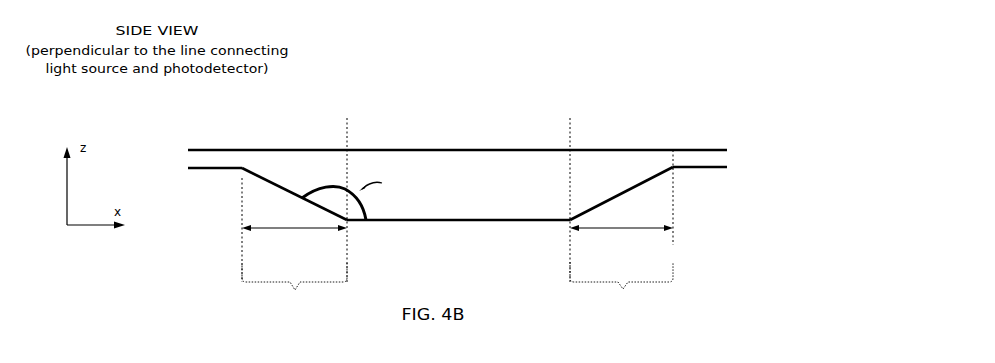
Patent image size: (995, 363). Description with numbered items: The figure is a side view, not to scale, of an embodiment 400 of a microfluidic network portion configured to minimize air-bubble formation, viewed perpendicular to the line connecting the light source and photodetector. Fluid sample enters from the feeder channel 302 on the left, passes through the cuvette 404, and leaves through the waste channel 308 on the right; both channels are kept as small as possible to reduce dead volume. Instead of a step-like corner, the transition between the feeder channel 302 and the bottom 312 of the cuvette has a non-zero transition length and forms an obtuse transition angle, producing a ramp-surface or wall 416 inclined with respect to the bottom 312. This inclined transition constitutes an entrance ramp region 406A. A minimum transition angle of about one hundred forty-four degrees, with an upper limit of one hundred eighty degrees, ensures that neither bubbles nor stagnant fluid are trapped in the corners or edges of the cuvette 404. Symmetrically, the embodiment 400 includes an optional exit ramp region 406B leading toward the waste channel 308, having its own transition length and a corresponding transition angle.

The embodiment 400 is at (486, 80).
The cuvette 404 is at (547, 160).
The feeder channel 302 is at (213, 155).
The ramp-surface or wall 416 is at (263, 180).
The bottom 312 is at (478, 221).
The waste channel 308 is at (712, 163).
The entrance ramp region 406A is at (294, 267).
The exit ramp region 406B is at (621, 264).